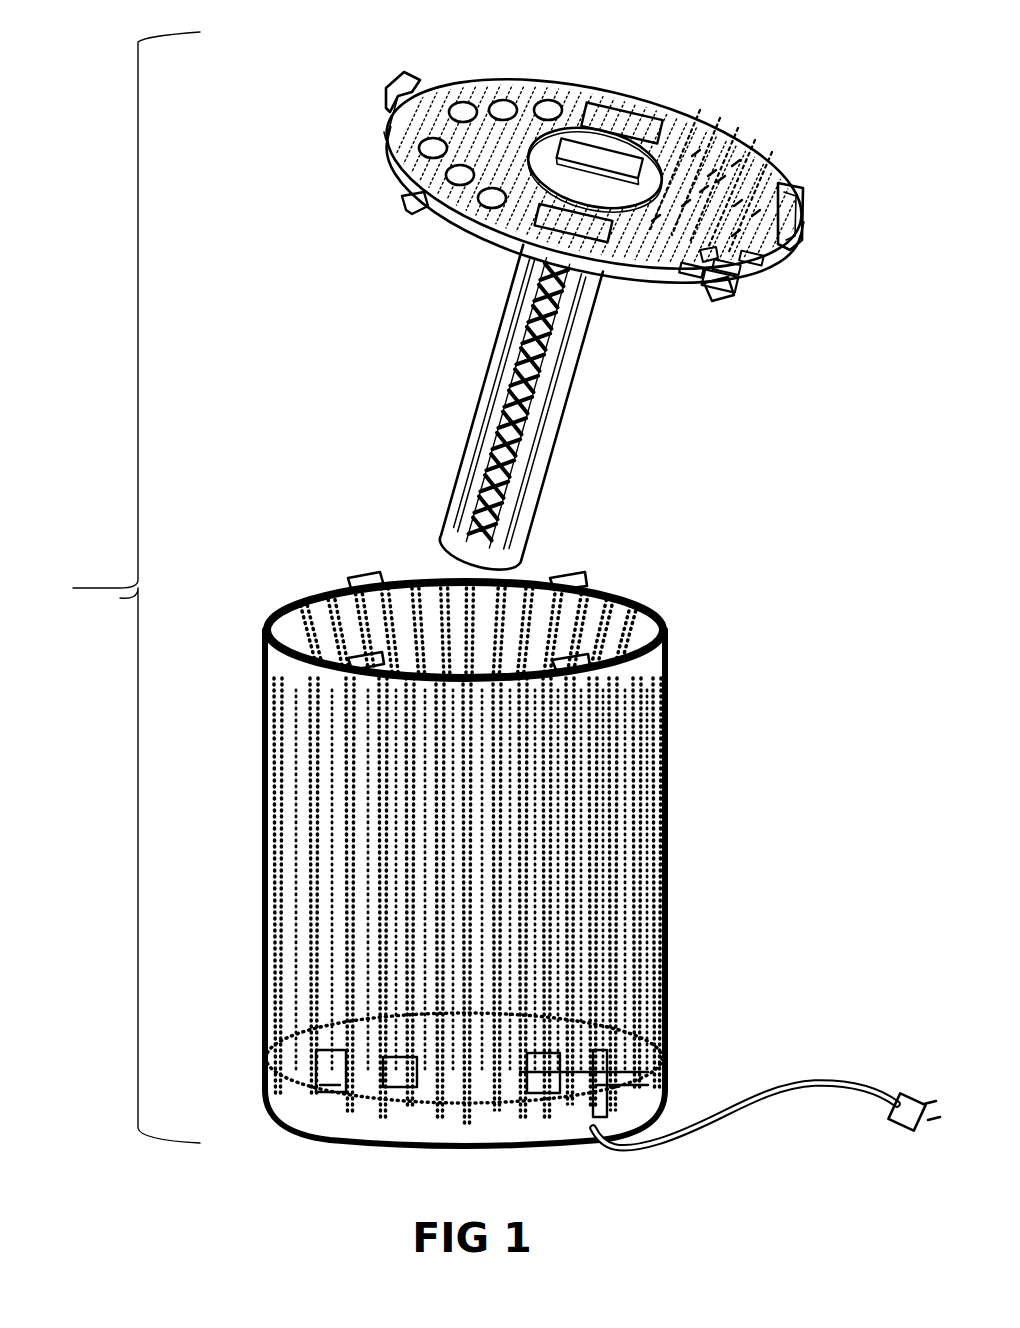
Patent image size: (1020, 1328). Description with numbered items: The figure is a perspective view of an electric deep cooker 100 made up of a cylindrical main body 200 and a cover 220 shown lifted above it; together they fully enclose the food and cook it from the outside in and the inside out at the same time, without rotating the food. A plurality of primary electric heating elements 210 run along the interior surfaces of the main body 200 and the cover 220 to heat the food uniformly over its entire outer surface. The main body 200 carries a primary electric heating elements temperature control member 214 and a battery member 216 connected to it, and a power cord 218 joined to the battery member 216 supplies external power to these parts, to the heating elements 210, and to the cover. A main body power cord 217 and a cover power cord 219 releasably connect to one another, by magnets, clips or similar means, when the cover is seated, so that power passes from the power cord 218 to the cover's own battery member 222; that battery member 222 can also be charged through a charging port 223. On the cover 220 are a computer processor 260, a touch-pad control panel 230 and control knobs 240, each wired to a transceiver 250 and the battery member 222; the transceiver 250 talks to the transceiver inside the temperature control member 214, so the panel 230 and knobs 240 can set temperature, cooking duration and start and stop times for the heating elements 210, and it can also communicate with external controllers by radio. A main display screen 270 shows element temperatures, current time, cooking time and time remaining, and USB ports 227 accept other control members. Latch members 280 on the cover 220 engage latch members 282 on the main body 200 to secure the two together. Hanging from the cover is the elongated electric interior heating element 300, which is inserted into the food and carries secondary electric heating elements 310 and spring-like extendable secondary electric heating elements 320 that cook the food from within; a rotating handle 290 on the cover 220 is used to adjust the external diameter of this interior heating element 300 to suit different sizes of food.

The electric deep cooker 100 is at (107, 587).
The main body 200 is at (672, 630).
The primary electric heating elements 210 is at (678, 148).
The primary electric heating elements temperature control member 214 is at (330, 1078).
The battery member 216 is at (598, 1072).
The main body power cord 217 is at (603, 838).
The power cord 218 is at (810, 1080).
The cover power cord 219 is at (745, 262).
The cover 220 is at (735, 130).
The battery member 222 is at (775, 190).
The charging port 223 is at (752, 267).
The USB ports 227 is at (691, 276).
The control panel 230 is at (550, 229).
The control knobs 240 is at (542, 98).
The transceiver 250 is at (710, 168).
The computer processor 260 is at (706, 264).
The main display screen 270 is at (633, 116).
The latch members 280 is at (412, 208).
The latch members 282 is at (352, 656).
The rotating handle 290 is at (582, 136).
The electric interior heating element 300 is at (599, 434).
The secondary electric heating elements 310 is at (545, 468).
The secondary electric heating elements 320 is at (507, 514).